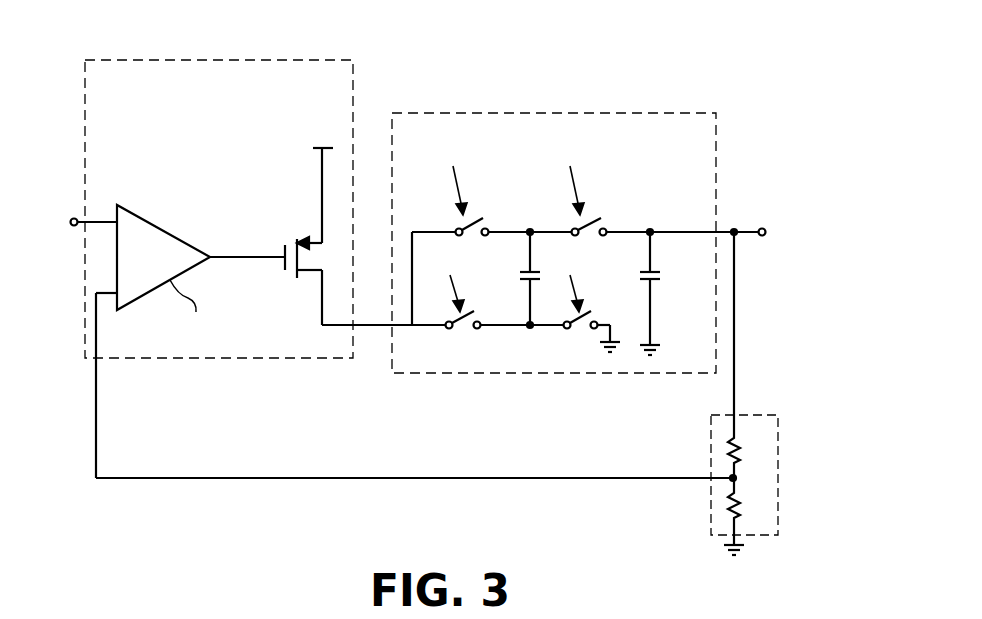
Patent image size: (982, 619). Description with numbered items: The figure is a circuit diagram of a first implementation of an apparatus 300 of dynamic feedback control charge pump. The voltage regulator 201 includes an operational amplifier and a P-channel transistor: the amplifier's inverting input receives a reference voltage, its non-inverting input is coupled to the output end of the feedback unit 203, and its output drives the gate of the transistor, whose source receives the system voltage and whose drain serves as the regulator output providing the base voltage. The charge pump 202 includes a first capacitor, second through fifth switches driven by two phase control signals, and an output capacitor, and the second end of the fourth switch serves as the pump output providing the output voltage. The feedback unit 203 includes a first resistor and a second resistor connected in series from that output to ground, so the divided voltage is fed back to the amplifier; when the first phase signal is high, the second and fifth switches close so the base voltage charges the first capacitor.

The voltage regulator 201 is at (158, 58).
The charge pump 202 is at (473, 110).
The feedback unit 203 is at (711, 501).
The apparatus of dynamic feedback control charge pump 300 is at (438, 310).